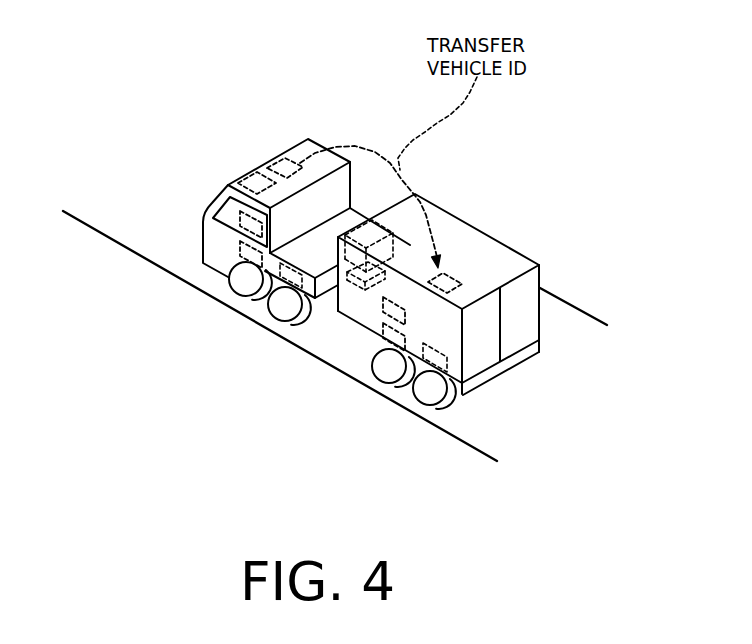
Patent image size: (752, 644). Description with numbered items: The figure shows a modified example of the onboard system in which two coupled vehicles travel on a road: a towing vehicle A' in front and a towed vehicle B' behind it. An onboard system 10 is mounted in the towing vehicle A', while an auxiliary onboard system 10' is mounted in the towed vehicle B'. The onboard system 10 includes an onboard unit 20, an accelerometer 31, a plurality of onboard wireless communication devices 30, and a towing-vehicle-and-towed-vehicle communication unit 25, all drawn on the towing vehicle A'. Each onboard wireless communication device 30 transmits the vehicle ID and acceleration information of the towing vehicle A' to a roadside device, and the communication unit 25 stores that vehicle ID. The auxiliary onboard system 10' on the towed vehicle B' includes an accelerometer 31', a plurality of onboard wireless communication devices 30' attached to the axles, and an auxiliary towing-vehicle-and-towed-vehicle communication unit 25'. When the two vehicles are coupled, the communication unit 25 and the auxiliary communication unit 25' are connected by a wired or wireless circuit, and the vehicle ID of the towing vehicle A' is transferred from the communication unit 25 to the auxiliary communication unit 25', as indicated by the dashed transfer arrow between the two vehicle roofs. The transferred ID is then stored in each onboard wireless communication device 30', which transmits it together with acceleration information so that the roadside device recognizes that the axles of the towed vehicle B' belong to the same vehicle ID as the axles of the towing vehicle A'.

The onboard system 10 is at (222, 189).
The auxiliary onboard system 10' is at (386, 297).
The onboard unit 20 is at (211, 116).
The towing-vehicle-and-towed-vehicle communication unit 25 is at (300, 108).
The onboard wireless communication device 30 is at (162, 290).
The accelerometer 31 is at (148, 252).
The auxiliary towing-vehicle-and-towed-vehicle communication unit 25' is at (516, 234).
The onboard wireless communication device 30' is at (299, 371).
The accelerometer 31' is at (286, 336).
The towing vehicle A' is at (223, 189).
The towed vehicle B' is at (386, 272).